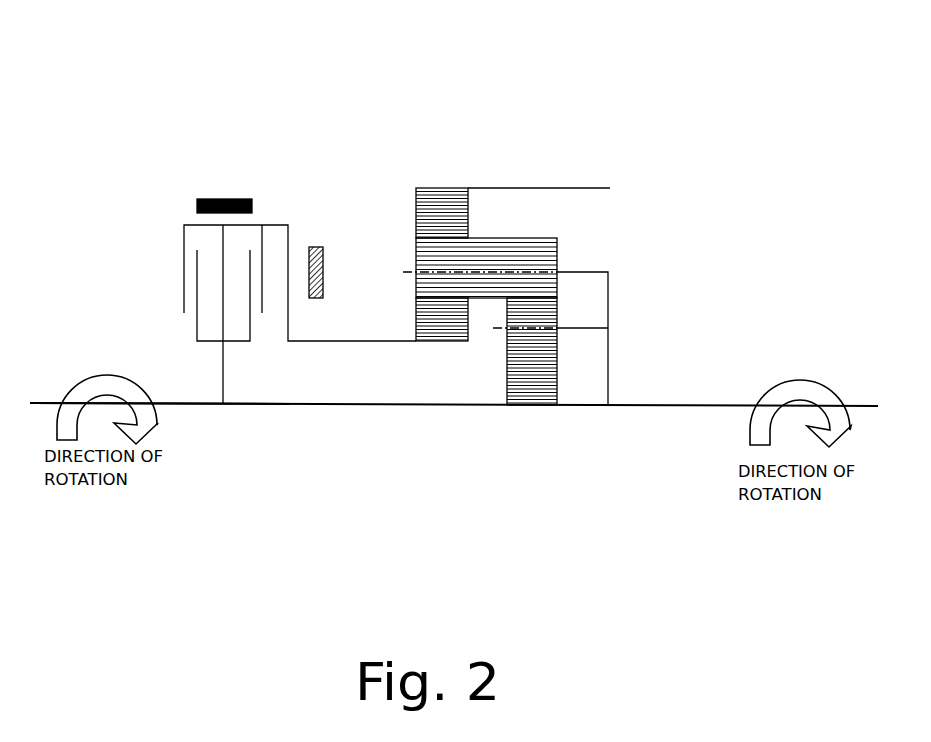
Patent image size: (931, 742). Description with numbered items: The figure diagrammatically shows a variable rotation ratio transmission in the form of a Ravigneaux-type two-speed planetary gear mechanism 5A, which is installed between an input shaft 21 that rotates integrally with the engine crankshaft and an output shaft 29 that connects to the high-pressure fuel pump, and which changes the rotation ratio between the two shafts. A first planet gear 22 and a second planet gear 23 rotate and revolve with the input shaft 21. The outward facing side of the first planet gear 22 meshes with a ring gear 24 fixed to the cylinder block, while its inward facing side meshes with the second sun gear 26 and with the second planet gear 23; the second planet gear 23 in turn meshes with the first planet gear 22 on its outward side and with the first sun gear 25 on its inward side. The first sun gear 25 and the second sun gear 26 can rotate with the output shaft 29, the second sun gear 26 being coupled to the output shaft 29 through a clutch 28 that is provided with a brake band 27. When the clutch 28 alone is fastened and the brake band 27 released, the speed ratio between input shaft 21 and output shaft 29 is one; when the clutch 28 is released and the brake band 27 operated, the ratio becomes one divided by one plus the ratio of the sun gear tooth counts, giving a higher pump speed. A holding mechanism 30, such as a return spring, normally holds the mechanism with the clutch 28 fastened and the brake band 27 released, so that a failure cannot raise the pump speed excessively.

The planetary gear mechanism 5A is at (280, 93).
The input shaft 21 is at (670, 406).
The first planet gear 22 is at (493, 258).
The second planet gear 23 is at (547, 329).
The ring gear 24 is at (443, 188).
The first sun gear 25 is at (543, 395).
The second sun gear 26 is at (452, 328).
The brake band 27 is at (227, 199).
The clutch 28 is at (208, 290).
The output shaft 29 is at (182, 403).
The holding mechanism 30 is at (322, 247).